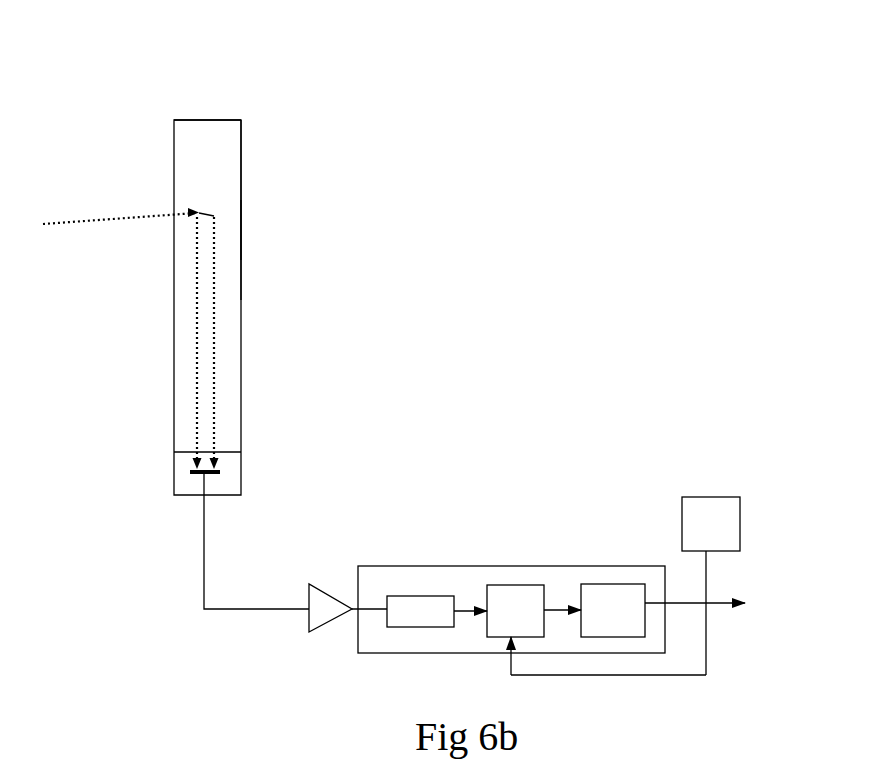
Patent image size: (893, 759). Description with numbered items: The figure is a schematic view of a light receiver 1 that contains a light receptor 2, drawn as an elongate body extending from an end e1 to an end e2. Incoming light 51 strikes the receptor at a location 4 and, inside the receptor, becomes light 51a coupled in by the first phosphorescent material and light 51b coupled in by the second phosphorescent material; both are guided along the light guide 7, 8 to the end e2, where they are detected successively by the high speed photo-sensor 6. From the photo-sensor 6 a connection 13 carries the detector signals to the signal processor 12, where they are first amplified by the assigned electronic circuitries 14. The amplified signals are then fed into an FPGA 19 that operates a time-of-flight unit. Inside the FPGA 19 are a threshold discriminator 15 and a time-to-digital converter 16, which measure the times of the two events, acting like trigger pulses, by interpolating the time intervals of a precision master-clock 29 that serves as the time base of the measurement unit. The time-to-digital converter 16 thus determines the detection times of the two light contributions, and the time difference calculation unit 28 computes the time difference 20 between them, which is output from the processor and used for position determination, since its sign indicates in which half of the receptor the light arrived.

The light receiver 1 is at (218, 255).
The first end of light guide e1 is at (166, 91).
The light receptor 2 is at (308, 205).
The light guide 7 is at (312, 227).
The protective layer 8 is at (312, 227).
The reflection point 4 is at (265, 252).
The incident light beam 51 is at (109, 262).
The light coupled in by the first phosphorescent material 51a is at (282, 343).
The light coupled in by the second phosphorescent material 51b is at (265, 343).
The high speed photo-sensor 6 is at (220, 472).
The end e2 is at (107, 552).
The detector signal line 13 is at (212, 583).
The electronic circuitries 14 is at (318, 638).
The FPGA 19 is at (481, 588).
The threshold discriminator 15 is at (437, 576).
The time-to-digital converter 16 is at (542, 600).
The time difference calculation unit 28 is at (613, 610).
The precision master-clock 29 is at (711, 586).
The signal processor 12 is at (608, 558).
The time difference 20 is at (724, 633).